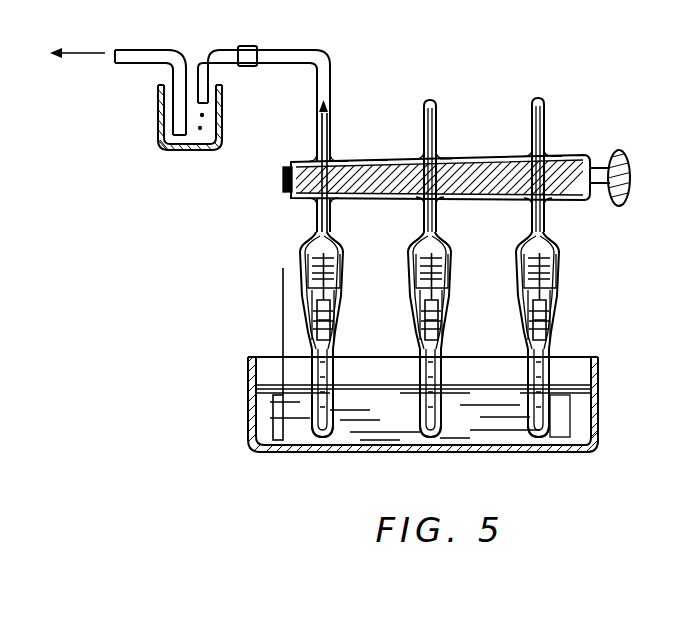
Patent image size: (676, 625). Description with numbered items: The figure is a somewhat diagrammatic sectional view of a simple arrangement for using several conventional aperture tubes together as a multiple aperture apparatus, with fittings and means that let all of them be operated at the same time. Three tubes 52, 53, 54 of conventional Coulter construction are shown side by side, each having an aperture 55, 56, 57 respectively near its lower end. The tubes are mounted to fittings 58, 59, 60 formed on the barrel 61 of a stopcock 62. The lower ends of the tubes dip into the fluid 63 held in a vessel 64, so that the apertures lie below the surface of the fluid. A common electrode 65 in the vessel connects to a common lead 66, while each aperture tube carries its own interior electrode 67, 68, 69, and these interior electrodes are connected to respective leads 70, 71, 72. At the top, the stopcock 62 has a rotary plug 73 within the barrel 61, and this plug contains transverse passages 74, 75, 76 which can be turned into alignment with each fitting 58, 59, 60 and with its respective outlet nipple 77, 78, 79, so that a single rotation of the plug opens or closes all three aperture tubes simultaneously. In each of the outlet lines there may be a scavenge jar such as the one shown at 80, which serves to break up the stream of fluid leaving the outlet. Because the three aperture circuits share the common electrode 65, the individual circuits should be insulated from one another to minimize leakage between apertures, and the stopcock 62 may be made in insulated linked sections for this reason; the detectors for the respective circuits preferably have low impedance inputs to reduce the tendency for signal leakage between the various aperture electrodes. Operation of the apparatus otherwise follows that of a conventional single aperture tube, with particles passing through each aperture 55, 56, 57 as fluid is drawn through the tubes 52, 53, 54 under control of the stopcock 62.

The aperture tube 52 is at (333, 353).
The aperture tube 53 is at (439, 347).
The aperture tube 54 is at (550, 351).
The aperture 55 is at (333, 424).
The aperture 56 is at (438, 422).
The aperture 57 is at (554, 424).
The fitting 58 is at (300, 252).
The fitting 59 is at (412, 243).
The fitting 60 is at (514, 246).
The barrel 61 is at (485, 157).
The stopcock 62 is at (634, 162).
The fluid 63 is at (578, 402).
The vessel 64 is at (596, 418).
The common electrode 65 is at (279, 428).
The common lead 66 is at (282, 298).
The interior electrode 67 is at (326, 318).
The interior electrode 68 is at (430, 318).
The third plunger 69 is at (541, 310).
The lead 70 is at (358, 224).
The lead 71 is at (442, 248).
The lead 72 is at (551, 249).
The rotary plug 73 is at (381, 158).
The transverse passage 74 is at (344, 159).
The transverse passage 75 is at (444, 157).
The transverse passage 76 is at (556, 155).
The outlet nipple 77 is at (316, 129).
The outlet nipple 78 is at (423, 110).
The outlet nipple 79 is at (531, 115).
The scavenge jar 80 is at (185, 60).